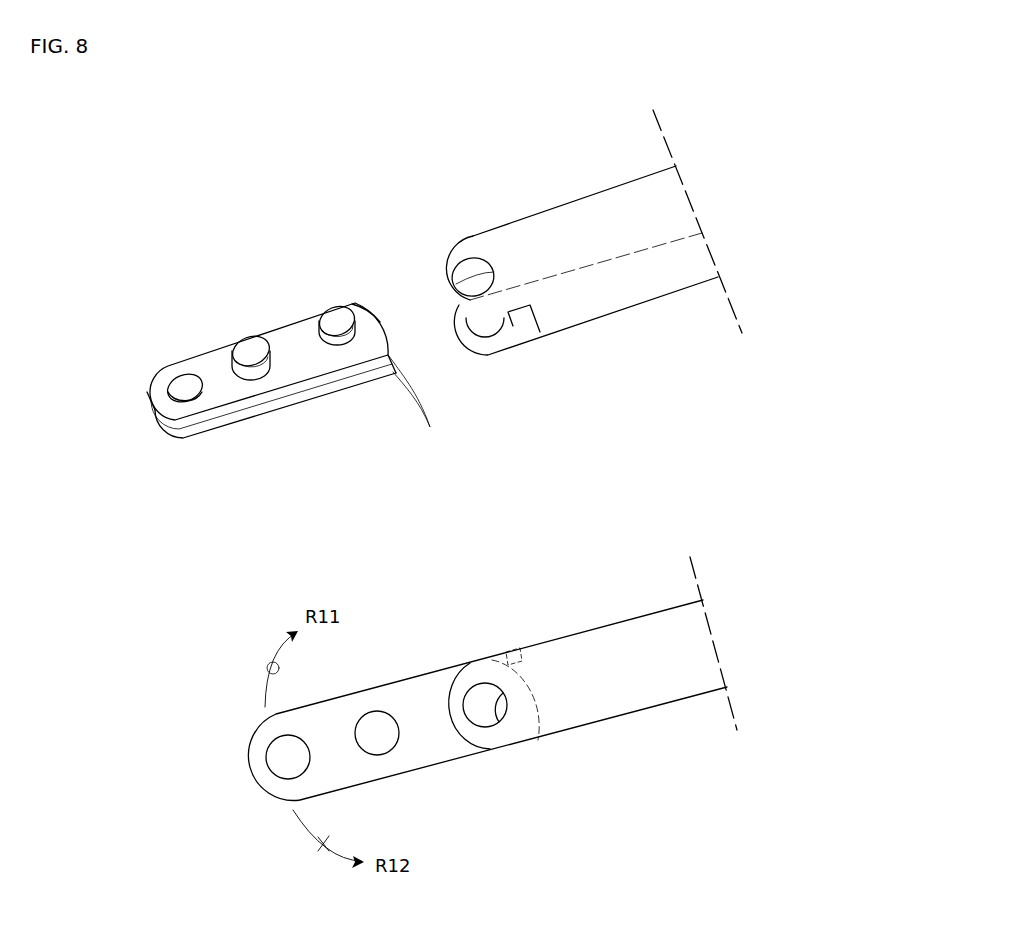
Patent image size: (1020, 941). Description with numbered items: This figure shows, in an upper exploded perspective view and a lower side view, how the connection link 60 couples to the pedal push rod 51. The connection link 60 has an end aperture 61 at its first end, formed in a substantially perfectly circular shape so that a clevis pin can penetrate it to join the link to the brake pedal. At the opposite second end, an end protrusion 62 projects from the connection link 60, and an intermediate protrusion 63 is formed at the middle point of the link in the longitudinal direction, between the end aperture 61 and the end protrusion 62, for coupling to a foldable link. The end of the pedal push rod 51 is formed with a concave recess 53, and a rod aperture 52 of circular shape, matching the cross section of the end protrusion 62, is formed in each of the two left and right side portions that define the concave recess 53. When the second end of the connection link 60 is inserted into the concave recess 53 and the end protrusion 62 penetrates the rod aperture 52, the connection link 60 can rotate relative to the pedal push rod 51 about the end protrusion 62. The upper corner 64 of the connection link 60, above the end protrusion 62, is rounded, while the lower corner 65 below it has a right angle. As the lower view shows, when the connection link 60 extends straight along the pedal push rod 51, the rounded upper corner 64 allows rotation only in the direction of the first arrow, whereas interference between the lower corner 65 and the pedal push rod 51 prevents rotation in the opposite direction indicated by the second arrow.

The pedal push rod 51 is at (560, 223).
The rod aperture 52 is at (472, 272).
The concave recess 53 is at (527, 327).
The connection link 60 is at (137, 390).
The end aperture 61 is at (183, 386).
The end protrusion 62 is at (337, 320).
The intermediate protrusion 63 is at (251, 350).
The upper corner 64 is at (351, 299).
The lower corner 65 is at (424, 403).